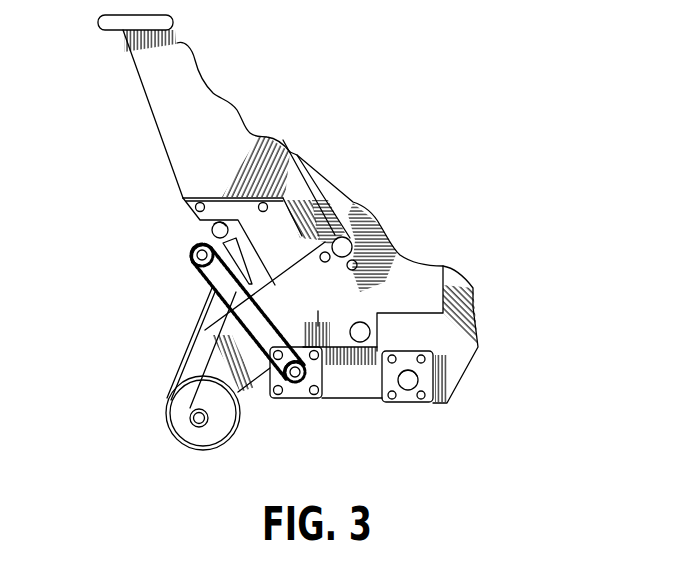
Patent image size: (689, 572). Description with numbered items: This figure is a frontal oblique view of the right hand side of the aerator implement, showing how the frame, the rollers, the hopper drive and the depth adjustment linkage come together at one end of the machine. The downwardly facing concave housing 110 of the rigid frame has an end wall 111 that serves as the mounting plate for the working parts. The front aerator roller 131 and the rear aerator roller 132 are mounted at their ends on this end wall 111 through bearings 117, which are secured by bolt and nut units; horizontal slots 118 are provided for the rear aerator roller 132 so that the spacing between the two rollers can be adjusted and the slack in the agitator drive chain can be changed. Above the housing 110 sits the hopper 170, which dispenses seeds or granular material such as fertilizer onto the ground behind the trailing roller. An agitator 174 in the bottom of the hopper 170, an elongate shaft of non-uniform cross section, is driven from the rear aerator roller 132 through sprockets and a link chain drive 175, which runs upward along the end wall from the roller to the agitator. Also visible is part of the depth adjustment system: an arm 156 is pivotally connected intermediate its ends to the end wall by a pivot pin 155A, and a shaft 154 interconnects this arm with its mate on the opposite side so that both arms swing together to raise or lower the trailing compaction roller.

The housing 110 is at (427, 290).
The end wall 111 is at (432, 322).
The bearings 117 is at (382, 375).
The slots 118 is at (433, 358).
The front aerator roller 131 is at (408, 387).
The rear aerator roller 132 is at (295, 385).
The shaft 154 is at (353, 203).
The pivot pin 155A is at (363, 332).
The arm 156 is at (295, 280).
The hopper 170 is at (180, 113).
The agitator 174 is at (190, 257).
The link chain drive 175 is at (210, 300).